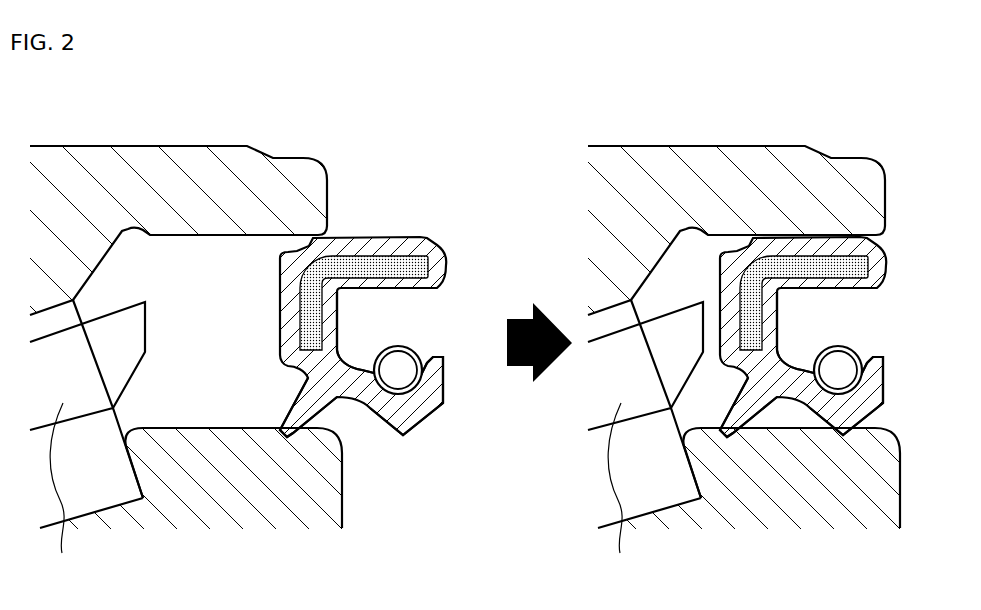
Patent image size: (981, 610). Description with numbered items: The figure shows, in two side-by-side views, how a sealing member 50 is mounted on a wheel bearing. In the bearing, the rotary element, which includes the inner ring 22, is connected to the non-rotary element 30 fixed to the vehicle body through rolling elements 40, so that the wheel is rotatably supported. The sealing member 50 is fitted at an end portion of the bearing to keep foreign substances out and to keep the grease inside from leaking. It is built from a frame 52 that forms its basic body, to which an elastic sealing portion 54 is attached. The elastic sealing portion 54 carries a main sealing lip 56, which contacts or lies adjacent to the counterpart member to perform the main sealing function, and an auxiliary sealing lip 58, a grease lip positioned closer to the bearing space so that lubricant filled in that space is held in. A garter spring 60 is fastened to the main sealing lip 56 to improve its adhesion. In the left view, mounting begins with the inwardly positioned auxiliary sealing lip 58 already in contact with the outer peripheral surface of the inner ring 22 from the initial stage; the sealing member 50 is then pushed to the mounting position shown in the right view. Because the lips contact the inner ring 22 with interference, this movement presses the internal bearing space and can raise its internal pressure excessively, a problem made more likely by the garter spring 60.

The inner ring 22 is at (247, 502).
The non-rotary element 30 is at (153, 177).
The rolling elements 40 is at (366, 439).
The sealing member 50 is at (435, 222).
The frame 52 is at (385, 262).
The elastic sealing portion 54 is at (342, 366).
The main sealing lip 56 is at (407, 427).
The auxiliary sealing lip 58 is at (302, 415).
The garter spring 60 is at (422, 378).